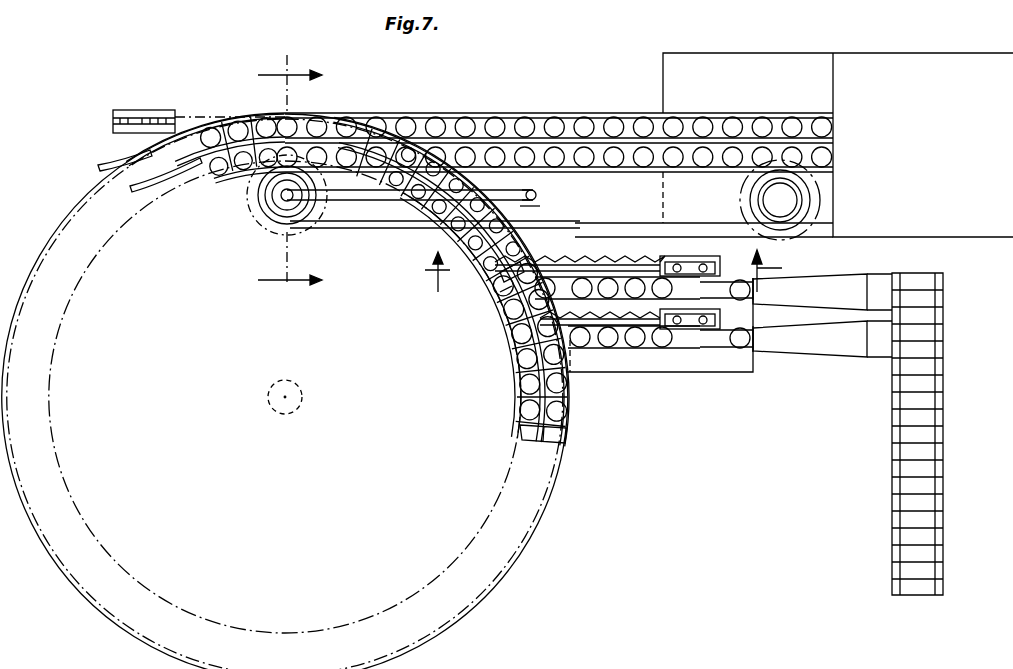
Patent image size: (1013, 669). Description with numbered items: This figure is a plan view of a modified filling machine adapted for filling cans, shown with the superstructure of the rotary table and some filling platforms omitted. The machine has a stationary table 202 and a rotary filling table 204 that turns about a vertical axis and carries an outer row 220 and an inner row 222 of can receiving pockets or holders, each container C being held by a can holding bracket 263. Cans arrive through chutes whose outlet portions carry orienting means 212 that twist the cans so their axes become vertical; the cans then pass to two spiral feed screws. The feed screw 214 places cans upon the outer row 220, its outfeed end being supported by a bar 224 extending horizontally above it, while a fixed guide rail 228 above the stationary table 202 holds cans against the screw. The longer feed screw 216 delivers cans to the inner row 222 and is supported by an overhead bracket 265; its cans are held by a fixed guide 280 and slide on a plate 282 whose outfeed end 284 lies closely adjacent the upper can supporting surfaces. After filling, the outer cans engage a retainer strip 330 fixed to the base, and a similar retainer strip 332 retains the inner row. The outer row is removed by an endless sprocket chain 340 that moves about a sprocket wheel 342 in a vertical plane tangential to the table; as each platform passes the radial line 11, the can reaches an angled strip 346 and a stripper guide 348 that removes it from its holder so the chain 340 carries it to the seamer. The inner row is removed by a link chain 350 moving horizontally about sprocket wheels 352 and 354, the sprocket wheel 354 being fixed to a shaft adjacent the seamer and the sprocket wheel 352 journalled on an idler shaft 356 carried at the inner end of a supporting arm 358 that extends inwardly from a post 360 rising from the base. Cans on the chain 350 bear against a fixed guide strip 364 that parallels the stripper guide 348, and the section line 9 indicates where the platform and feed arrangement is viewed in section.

The radial line 11— 11 is at (290, 171).
The section line 9— 9 is at (604, 271).
The sprocket wheel 342 is at (138, 122).
The angled strip 346 is at (368, 115).
The stripper guide 348 is at (432, 150).
The fixed guide strip 364 is at (497, 143).
The endless sprocket chain 340 is at (582, 120).
The sprocket wheel 354 is at (752, 205).
The retainer strip 330 is at (123, 160).
The retainer strip 332 is at (147, 192).
The idler shaft 356 is at (283, 195).
The supporting arm 358 is at (533, 190).
The post 360 is at (532, 197).
The sprocket wheel 352 is at (270, 217).
The link chain 350 is at (408, 221).
The plate 282 is at (585, 278).
The feed screw 216 is at (638, 221).
The overhead bracket 265 is at (645, 246).
The fixed guide 280 is at (690, 300).
The orienting means 212 is at (797, 356).
The inner row 222 is at (500, 280).
The outfeed end 284 is at (500, 293).
The rotary filling table 204 is at (520, 358).
The can holding brackets 263 is at (520, 366).
The feed screw 214 is at (592, 327).
The stationary table 202 is at (690, 384).
The bar 224 is at (618, 325).
The fixed guide rail 228 is at (700, 350).
The outer row 220 is at (565, 430).
The container C is at (660, 163).